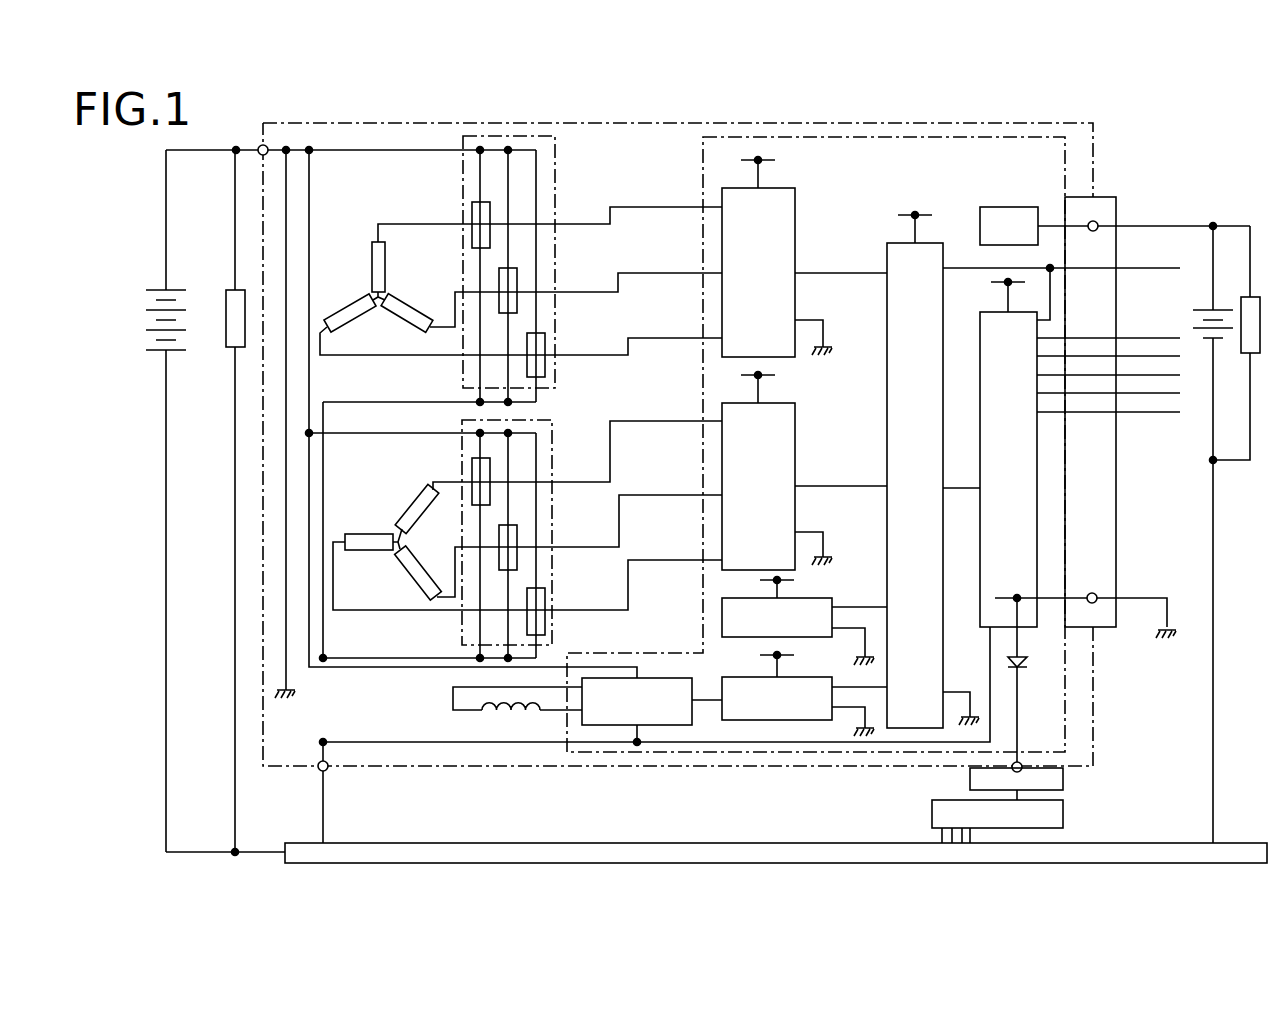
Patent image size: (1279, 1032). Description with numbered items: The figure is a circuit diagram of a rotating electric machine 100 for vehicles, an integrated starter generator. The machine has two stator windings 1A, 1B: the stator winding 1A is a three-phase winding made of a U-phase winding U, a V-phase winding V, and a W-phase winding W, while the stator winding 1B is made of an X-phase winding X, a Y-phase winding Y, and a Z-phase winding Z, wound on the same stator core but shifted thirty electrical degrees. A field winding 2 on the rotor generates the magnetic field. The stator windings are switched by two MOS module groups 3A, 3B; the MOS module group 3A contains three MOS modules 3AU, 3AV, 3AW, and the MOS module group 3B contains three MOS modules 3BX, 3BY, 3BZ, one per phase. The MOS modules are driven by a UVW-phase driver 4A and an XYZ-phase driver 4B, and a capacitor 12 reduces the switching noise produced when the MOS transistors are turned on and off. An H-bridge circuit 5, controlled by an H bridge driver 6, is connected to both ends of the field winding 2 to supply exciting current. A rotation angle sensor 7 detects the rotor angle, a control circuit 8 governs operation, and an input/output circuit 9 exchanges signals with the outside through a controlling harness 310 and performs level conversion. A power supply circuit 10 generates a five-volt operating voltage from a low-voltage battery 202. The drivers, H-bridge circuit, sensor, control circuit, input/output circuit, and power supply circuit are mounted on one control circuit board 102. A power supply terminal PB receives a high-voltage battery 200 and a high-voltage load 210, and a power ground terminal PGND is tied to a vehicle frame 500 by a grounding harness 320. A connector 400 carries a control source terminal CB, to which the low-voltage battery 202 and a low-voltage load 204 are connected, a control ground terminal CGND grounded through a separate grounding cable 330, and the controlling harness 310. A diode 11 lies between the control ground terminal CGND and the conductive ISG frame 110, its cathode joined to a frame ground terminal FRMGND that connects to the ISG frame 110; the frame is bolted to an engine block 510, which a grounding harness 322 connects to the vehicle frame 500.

The rotating electric machine 100 is at (990, 123).
The control circuit board 102 is at (1066, 152).
The stator winding 1A is at (517, 278).
The stator winding 1B is at (527, 515).
The field winding 2 is at (508, 718).
The MOS module group 3A is at (480, 397).
The MOS module 3AU is at (472, 208).
The MOS module 3AV is at (518, 279).
The MOS module 3AW is at (546, 345).
The MOS module group 3B is at (474, 526).
The MOS module 3BX is at (472, 470).
The MOS module 3BY is at (518, 530).
The MOS module 3BZ is at (546, 625).
The UVW-phase driver 4A is at (773, 188).
The XYZ-phase driver 4B is at (773, 403).
The H-bridge circuit 5 is at (677, 677).
The H bridge driver 6 is at (798, 677).
The rotation angle sensor 7 is at (818, 598).
The control circuit 8 is at (935, 243).
The input/output circuit 9 is at (992, 312).
The power supply circuit 10 is at (1005, 207).
The diode 11 is at (1028, 662).
The capacitor 12 is at (284, 700).
The ISG frame 110 is at (1064, 778).
The high-voltage battery 200 is at (173, 286).
The low-voltage battery 202 is at (1211, 393).
The low-voltage load 204 is at (1250, 296).
The high-voltage load 210 is at (233, 350).
The controlling harness 310 is at (1147, 420).
The grounding harness 320 is at (322, 818).
The grounding harness 322 is at (940, 836).
The grounding cable 330 is at (1130, 600).
The connector 400 is at (1117, 485).
The vehicle frame 500 is at (508, 843).
The engine block 510 is at (1064, 815).
The power supply terminal PB is at (247, 139).
The power ground terminal PGND is at (360, 776).
The control source terminal CB is at (1098, 222).
The control ground terminal CGND is at (1097, 597).
The frame ground terminal FRMGND is at (1022, 766).
The U-phase winding U is at (387, 267).
The V-phase winding V is at (407, 321).
The W-phase winding W is at (350, 312).
The X-phase winding X is at (417, 514).
The Y-phase winding Y is at (418, 574).
The Z-phase winding Z is at (369, 554).